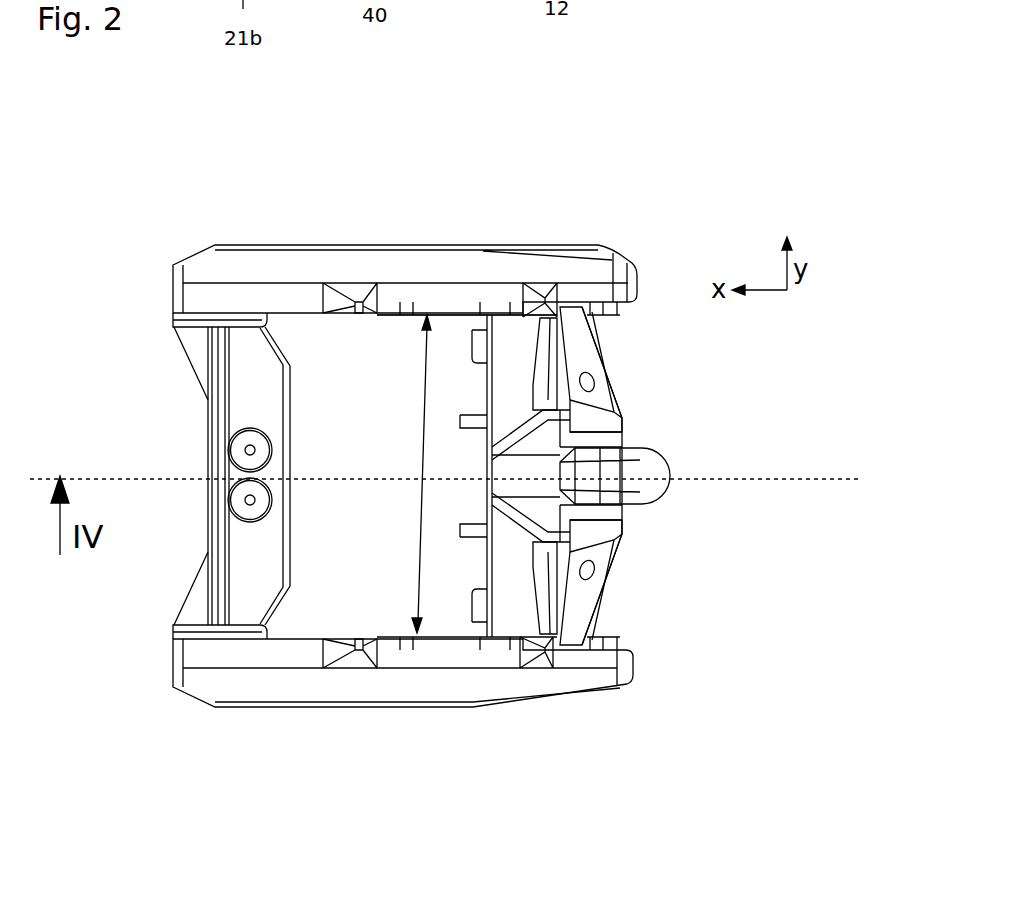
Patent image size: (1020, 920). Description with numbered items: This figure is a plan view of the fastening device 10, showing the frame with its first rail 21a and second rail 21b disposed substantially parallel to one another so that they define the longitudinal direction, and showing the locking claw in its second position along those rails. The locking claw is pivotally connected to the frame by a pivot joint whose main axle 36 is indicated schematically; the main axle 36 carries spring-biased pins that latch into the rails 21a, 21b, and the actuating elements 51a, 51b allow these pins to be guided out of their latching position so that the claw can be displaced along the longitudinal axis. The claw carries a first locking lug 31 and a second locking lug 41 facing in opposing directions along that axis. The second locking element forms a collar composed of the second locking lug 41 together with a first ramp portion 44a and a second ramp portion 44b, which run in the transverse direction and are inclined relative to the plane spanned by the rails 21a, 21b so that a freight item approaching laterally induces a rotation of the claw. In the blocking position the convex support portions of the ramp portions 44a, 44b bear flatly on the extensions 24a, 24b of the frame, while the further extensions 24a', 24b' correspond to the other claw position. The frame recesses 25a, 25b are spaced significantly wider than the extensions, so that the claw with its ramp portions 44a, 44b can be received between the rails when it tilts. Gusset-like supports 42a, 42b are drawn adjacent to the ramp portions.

The fastening device 10 is at (124, 256).
The first rail 21a is at (258, 265).
The second rail 21b is at (220, 684).
The extension 24a is at (334, 231).
The extension 24b is at (330, 710).
The extension 24a' is at (531, 243).
The extension 24b' is at (526, 706).
The frame recess 25a is at (415, 477).
The frame recess 25b is at (415, 477).
The first locking lug 31 is at (613, 477).
The main axle 36 is at (487, 643).
The second locking lug 41 is at (522, 500).
The upper support arm 42a is at (627, 368).
The lower support arm 42b is at (629, 588).
The first ramp portion 44a is at (588, 340).
The second ramp portion 44b is at (567, 613).
The actuating element 51a is at (472, 422).
The actuating element 51b is at (462, 532).